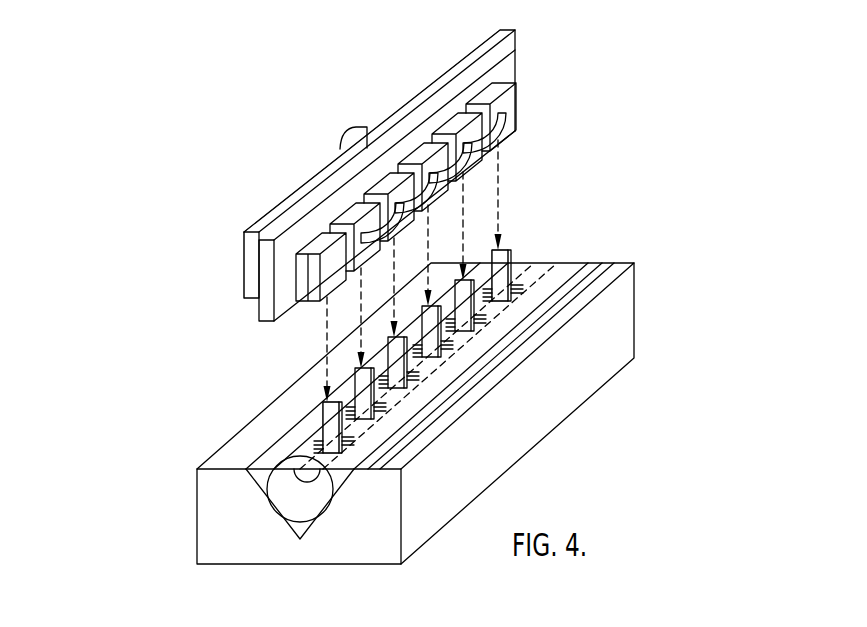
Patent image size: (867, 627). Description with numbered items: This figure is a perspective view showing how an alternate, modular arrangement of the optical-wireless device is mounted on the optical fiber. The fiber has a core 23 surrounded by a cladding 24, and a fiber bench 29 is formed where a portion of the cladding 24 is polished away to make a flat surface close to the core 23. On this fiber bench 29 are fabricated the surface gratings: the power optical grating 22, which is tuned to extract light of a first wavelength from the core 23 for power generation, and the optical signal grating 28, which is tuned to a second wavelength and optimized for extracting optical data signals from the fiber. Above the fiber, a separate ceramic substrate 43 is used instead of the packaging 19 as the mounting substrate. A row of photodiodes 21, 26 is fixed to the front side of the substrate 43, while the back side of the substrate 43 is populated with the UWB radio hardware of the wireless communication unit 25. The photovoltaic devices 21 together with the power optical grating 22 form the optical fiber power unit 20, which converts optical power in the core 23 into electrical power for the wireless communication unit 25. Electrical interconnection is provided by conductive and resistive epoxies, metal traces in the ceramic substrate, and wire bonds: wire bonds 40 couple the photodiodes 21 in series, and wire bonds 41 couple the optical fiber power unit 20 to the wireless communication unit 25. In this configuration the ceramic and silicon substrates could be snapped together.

The packaging 19 is at (297, 211).
The optical fiber power unit 20 is at (212, 265).
The photovoltaic device 21 is at (318, 301).
The power optical grating 22 is at (322, 455).
The core 23 is at (534, 260).
The cladding 24 is at (602, 262).
The wireless communication unit 25 is at (388, 78).
The photodiode 26 is at (517, 96).
The optical signal grating 28 is at (556, 268).
The fiber bench 29 is at (185, 505).
The wire bonds 40 is at (400, 240).
The wire bonds 41 is at (340, 143).
The substrate 43 is at (517, 45).